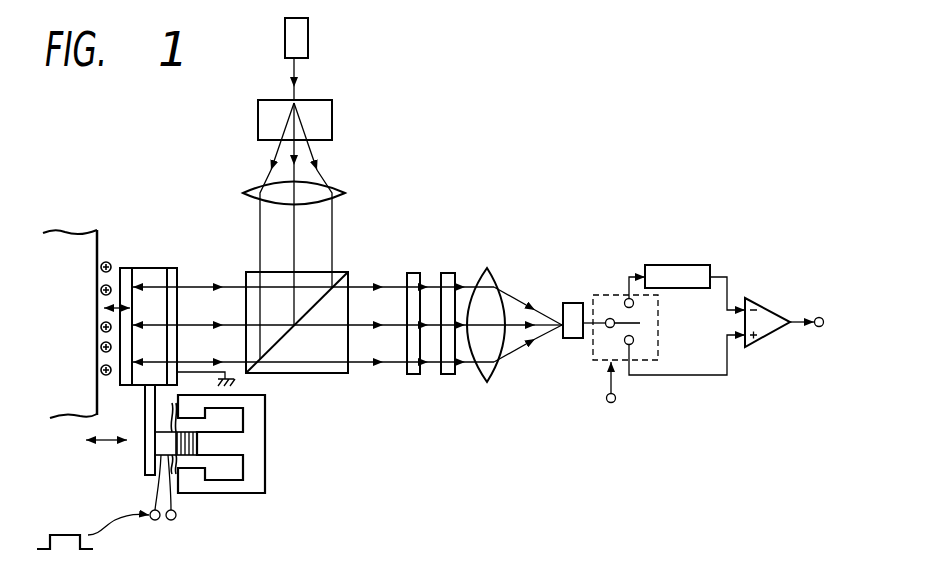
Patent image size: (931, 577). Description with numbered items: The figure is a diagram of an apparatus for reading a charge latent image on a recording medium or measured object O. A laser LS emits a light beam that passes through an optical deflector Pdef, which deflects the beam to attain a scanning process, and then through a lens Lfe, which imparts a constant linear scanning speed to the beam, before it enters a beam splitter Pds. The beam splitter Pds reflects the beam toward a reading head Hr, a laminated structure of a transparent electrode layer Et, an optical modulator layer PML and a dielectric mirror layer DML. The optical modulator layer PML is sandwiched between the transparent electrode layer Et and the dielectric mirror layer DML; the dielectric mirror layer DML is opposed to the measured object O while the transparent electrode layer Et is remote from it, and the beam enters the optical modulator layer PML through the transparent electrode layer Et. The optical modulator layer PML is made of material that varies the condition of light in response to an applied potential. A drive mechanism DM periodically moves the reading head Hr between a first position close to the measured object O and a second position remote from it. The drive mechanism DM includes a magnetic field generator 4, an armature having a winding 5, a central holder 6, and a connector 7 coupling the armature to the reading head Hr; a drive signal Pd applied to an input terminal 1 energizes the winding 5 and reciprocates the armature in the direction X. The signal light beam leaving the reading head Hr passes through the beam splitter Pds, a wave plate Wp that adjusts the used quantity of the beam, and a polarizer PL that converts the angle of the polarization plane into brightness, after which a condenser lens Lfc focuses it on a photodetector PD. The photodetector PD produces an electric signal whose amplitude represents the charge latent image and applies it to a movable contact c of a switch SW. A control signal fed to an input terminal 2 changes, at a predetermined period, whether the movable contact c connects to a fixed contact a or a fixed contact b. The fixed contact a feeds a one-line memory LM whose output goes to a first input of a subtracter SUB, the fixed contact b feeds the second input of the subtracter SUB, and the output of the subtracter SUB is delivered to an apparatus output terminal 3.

The recording medium O is at (63, 253).
The reading head Hr is at (140, 268).
The dielectric mirror layer DML is at (126, 270).
The optical modulator layer PML is at (153, 275).
The transparent electrode layer Et is at (185, 288).
The laser LS is at (308, 36).
The optical deflector Pdef is at (332, 116).
The lens Lfe is at (340, 191).
The beam splitter Pds is at (333, 368).
The wave plate Wp is at (412, 275).
The polarizer PL is at (448, 275).
The condenser lens Lfc is at (492, 285).
The photodetector PD is at (574, 305).
The switch SW is at (617, 328).
The fixed contact a is at (626, 298).
The fixed contact b is at (634, 340).
The movable contact c is at (638, 322).
The 1-line memory LM is at (658, 265).
The subtracter SUB is at (776, 305).
The apparatus output terminal 3 is at (819, 316).
The input terminal 2 is at (618, 398).
The drive mechanism DM is at (233, 441).
The magnetic field generator 4 is at (258, 457).
The winding 5 is at (200, 441).
The central holder 6 is at (167, 412).
The connector 7 is at (148, 424).
The input terminal 1 is at (178, 524).
The drive signal Pd is at (93, 517).
The direction X is at (108, 447).